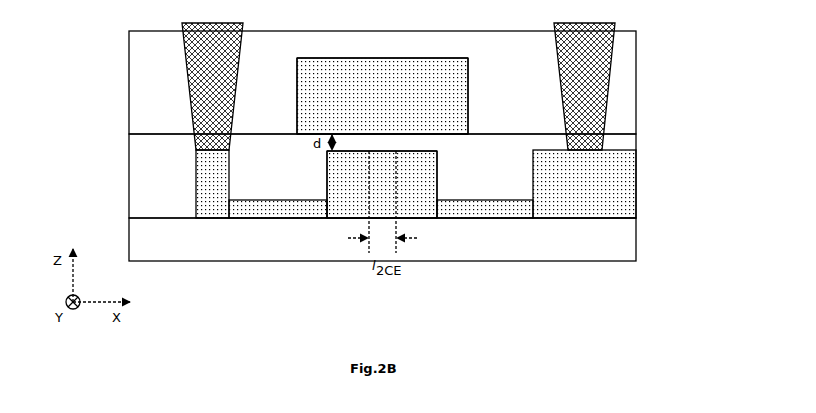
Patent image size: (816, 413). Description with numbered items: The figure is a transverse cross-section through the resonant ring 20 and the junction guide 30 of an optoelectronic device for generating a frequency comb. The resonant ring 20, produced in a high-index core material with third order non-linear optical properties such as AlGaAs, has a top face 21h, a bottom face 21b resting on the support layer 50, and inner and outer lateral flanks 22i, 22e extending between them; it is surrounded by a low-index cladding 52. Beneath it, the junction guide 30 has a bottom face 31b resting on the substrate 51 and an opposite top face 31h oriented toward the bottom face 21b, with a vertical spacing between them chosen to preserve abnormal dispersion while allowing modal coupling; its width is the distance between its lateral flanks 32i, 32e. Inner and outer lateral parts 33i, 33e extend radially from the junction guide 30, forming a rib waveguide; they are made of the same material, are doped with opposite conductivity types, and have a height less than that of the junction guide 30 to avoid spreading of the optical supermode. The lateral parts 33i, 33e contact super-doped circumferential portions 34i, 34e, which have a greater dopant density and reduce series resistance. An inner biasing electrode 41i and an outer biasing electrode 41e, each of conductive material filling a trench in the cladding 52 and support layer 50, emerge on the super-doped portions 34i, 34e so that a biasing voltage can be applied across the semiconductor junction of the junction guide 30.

The cladding 52 is at (128, 82).
The support layer 50 is at (128, 171).
The substrate 51 is at (128, 237).
The outer biasing electrode 41e is at (191, 92).
The inner biasing electrode 41i is at (607, 92).
The resonant ring 20 is at (292, 54).
The outer lateral flank 22e is at (297, 98).
The inner lateral flank 22i is at (468, 95).
The top face 21h is at (458, 58).
The bottom face 21b is at (465, 134).
The junction guide 30 is at (292, 157).
The outer lateral flank 32e is at (327, 185).
The inner lateral flank 32i is at (437, 188).
The top face 31h is at (437, 150).
The bottom face 31b is at (437, 220).
The outer lateral part 33e is at (279, 221).
The inner lateral part 33i is at (503, 221).
The outer super-doped portion 34e is at (196, 178).
The inner super-doped portion 34i is at (638, 184).